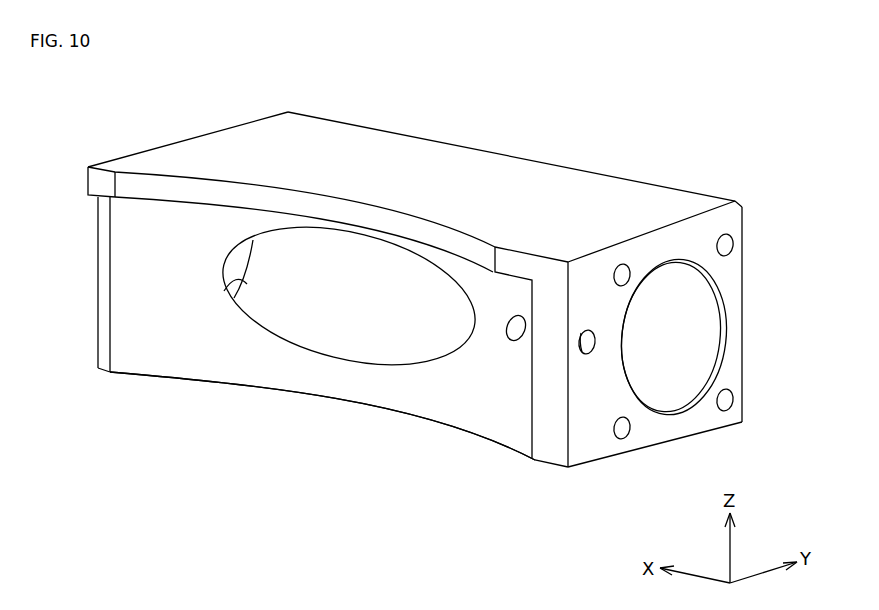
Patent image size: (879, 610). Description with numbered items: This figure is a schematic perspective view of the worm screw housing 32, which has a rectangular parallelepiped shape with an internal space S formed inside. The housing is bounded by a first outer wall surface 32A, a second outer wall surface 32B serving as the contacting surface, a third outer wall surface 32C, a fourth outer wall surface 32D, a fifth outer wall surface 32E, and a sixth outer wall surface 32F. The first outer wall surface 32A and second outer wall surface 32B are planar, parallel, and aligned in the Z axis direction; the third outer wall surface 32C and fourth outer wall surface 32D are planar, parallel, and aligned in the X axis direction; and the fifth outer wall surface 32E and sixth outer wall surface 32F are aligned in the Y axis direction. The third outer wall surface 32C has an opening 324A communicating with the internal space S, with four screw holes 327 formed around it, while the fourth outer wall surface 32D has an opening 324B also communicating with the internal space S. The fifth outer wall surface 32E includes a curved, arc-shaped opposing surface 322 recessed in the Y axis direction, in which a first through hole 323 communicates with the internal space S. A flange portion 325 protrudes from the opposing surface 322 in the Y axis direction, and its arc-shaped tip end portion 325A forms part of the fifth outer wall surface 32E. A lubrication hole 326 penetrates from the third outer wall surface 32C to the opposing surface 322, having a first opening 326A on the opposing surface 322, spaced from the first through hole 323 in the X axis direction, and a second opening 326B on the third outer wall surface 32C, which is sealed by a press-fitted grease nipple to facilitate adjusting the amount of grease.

The worm screw housing 32 is at (523, 122).
The first outer wall surface 32A is at (412, 160).
The second outer wall surface 32B is at (672, 422).
The third outer wall surface 32C is at (594, 440).
The fourth outer wall surface 32D is at (130, 247).
The fifth outer wall surface 32E is at (550, 440).
The sixth outer wall surface 32F is at (727, 285).
The opposing surface 322 is at (243, 358).
The first through hole 323 is at (338, 310).
The opening 324A is at (690, 257).
The opening 324B is at (232, 292).
The flange portion 325 is at (230, 180).
The tip end portion 325A is at (165, 187).
The lubrication hole 326 is at (590, 343).
The first opening 326A is at (518, 340).
The second opening 326B is at (585, 328).
The screw holes 327 is at (624, 264).
The internal space S is at (673, 350).